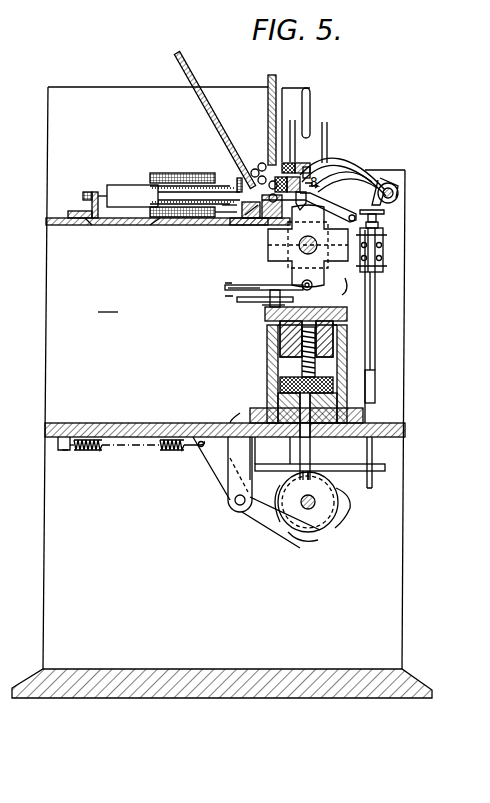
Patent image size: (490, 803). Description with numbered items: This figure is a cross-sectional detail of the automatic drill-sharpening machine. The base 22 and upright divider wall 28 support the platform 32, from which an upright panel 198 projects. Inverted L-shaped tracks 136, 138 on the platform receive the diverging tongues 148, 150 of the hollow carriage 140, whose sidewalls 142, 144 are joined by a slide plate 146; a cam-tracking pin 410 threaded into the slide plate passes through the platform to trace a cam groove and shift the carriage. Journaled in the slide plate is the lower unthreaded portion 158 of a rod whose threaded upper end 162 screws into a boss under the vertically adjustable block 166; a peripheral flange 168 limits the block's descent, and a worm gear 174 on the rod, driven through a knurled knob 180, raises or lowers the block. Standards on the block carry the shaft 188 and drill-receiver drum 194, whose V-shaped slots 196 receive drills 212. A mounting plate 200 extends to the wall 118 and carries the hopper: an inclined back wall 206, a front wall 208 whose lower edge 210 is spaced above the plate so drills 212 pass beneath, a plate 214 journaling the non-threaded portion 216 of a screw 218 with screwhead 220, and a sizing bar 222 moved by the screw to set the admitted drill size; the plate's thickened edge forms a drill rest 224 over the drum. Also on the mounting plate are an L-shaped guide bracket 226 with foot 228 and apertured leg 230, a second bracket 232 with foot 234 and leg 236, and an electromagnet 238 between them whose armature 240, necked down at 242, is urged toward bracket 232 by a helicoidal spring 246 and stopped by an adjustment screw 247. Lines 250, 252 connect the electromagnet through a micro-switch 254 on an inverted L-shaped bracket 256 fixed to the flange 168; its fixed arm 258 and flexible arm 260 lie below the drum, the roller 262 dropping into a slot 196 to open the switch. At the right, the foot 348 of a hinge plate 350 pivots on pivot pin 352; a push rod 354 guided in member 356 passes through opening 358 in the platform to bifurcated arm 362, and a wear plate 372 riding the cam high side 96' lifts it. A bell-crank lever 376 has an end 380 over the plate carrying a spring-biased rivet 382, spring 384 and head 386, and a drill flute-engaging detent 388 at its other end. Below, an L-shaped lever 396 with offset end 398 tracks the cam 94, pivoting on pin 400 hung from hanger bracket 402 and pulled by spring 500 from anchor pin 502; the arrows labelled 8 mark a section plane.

The cam wheel 8 is at (322, 493).
The base 22 is at (362, 698).
The divider wall 28 is at (403, 588).
The platform 32 is at (102, 450).
The cam disc 94 is at (337, 526).
The high side of cam 96' is at (313, 550).
The wall 118 is at (385, 300).
The track 136 is at (255, 420).
The track 138 is at (335, 385).
The carriage 140 is at (257, 356).
The sidewall 142 is at (266, 368).
The sidewall 144 is at (348, 360).
The slide plate 146 is at (312, 440).
The tongue 148 is at (240, 418).
The tongue 150 is at (365, 418).
The lower unthreaded portion 158 is at (279, 450).
The threaded upper end 162 is at (345, 338).
The block 166 is at (278, 340).
The peripheral flange 168 is at (348, 318).
The worm gear 174 is at (335, 378).
The knob 180 is at (376, 388).
The shaft 188 is at (290, 256).
The drill-receiver drum 194 is at (340, 205).
The V-shaped slots 196 is at (336, 282).
The panel 198 is at (107, 304).
The mounting plate 200 is at (112, 225).
The back wall 206 is at (178, 56).
The front wall 208 is at (276, 80).
The lower edge 210 is at (258, 165).
The drills 212 is at (238, 215).
The plate 214 is at (310, 168).
The non-threaded portion 216 is at (312, 175).
The threaded screw 218 is at (282, 165).
The screwhead 220 is at (318, 180).
The sizing bar 222 is at (262, 212).
The drill rest 224 is at (270, 226).
The guide bracket 226 is at (238, 178).
The foot portion 228 is at (258, 210).
The leg portion 230 is at (225, 215).
The bracket 232 is at (88, 192).
The foot portion 234 is at (75, 226).
The leg portion 236 is at (92, 226).
The electromagnet 238 is at (182, 172).
The armature 240 is at (122, 184).
The necked-down portion 242 is at (158, 225).
The helicoidal spring 246 is at (165, 172).
The adjustment screw 247 is at (96, 192).
The line 250 is at (152, 172).
The line 252 is at (206, 172).
The micro-switch 254 is at (226, 309).
The bracket 256 is at (268, 307).
The fixed switch arm 258 is at (268, 324).
The movable switch arm 260 is at (284, 284).
The roller 262 is at (306, 290).
The foot 348 is at (384, 248).
The hinge plate 350 is at (378, 220).
The pivot pin 352 is at (380, 228).
The push rod 354 is at (376, 285).
The guide member 356 is at (384, 262).
The opening 358 is at (312, 452).
The bifurcated arm 362 is at (374, 484).
The wear plate 372 is at (262, 463).
The bell-crank lever 376 is at (350, 185).
The end of lever 380 is at (392, 182).
The rivet 382 is at (392, 205).
The spring 384 is at (386, 212).
The plate-engaging head 386 is at (400, 184).
The drill flute-engaging detent 388 is at (330, 182).
The L-shaped lever 396 is at (208, 470).
The cam-engaging offset end 398 is at (300, 546).
The pivot pin 400 is at (236, 506).
The hanger bracket 402 is at (230, 482).
The cam-tracking pin 410 is at (300, 466).
The spring 500 is at (166, 452).
The anchor pin 502 is at (58, 450).